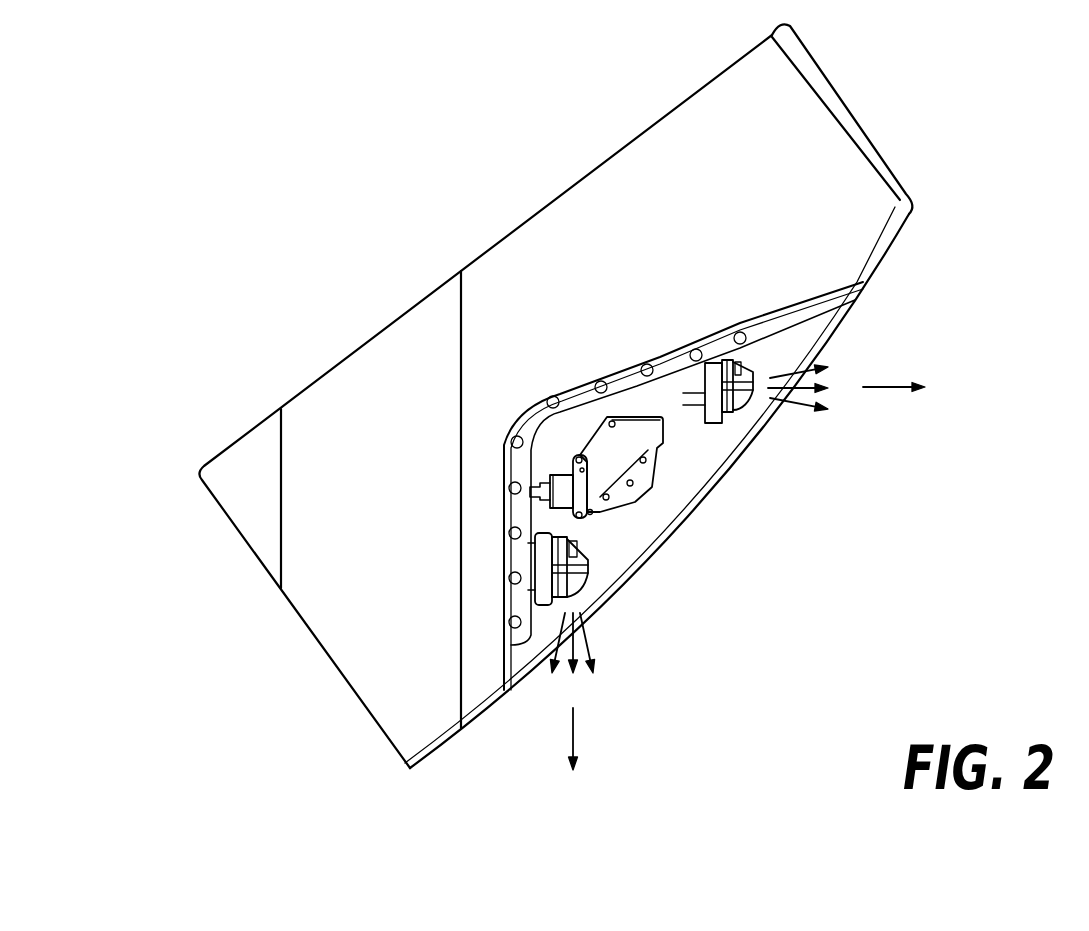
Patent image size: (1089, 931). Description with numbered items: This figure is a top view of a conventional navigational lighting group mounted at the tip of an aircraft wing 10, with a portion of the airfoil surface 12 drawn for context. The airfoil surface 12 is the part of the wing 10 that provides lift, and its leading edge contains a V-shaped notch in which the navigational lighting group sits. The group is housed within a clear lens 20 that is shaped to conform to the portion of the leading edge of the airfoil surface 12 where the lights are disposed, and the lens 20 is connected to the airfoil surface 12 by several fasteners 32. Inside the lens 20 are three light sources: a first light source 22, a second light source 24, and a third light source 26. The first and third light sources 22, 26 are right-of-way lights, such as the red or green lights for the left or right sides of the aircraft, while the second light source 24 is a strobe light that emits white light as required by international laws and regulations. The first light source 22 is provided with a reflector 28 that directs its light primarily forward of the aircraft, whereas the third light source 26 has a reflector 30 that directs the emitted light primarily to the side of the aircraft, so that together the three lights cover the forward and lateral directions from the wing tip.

The wing 10 is at (276, 288).
The airfoil surface 12 is at (488, 268).
The clear lens 20 is at (600, 613).
The first light source 22 is at (580, 578).
The second light source 24 is at (657, 485).
The third light source 26 is at (750, 400).
The reflector 28 is at (587, 562).
The reflector 30 is at (755, 367).
The fasteners 32 is at (646, 366).